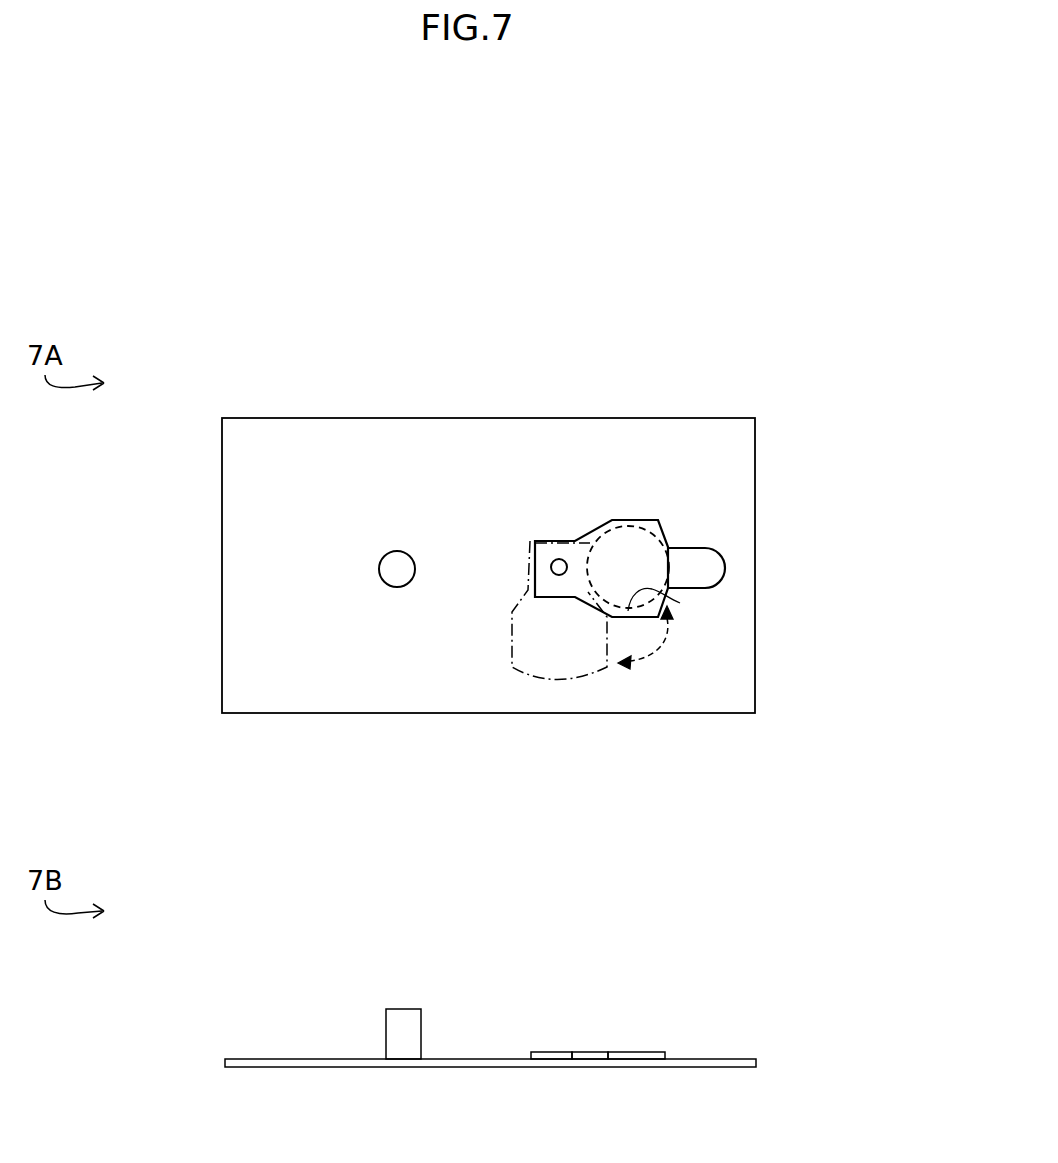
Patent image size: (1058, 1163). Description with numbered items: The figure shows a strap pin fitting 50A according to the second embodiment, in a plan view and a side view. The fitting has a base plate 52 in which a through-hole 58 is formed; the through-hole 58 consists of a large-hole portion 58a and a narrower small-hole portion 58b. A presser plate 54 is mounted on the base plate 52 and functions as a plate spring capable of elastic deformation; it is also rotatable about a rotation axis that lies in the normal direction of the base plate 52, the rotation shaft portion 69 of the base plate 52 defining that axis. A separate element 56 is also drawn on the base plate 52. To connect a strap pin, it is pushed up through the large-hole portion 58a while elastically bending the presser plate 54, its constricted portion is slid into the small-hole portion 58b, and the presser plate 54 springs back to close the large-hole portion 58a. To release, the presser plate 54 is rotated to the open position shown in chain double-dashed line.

The strap pin fitting 50A is at (675, 358).
The base plate 52 is at (312, 427).
The presser plate 54 is at (632, 519).
The positioning pin 56 is at (390, 570).
The through-hole 58 is at (756, 825).
The large-hole portion 58a is at (680, 603).
The small-hole portion 58b is at (688, 549).
The rotation shaft portion 69 is at (557, 559).